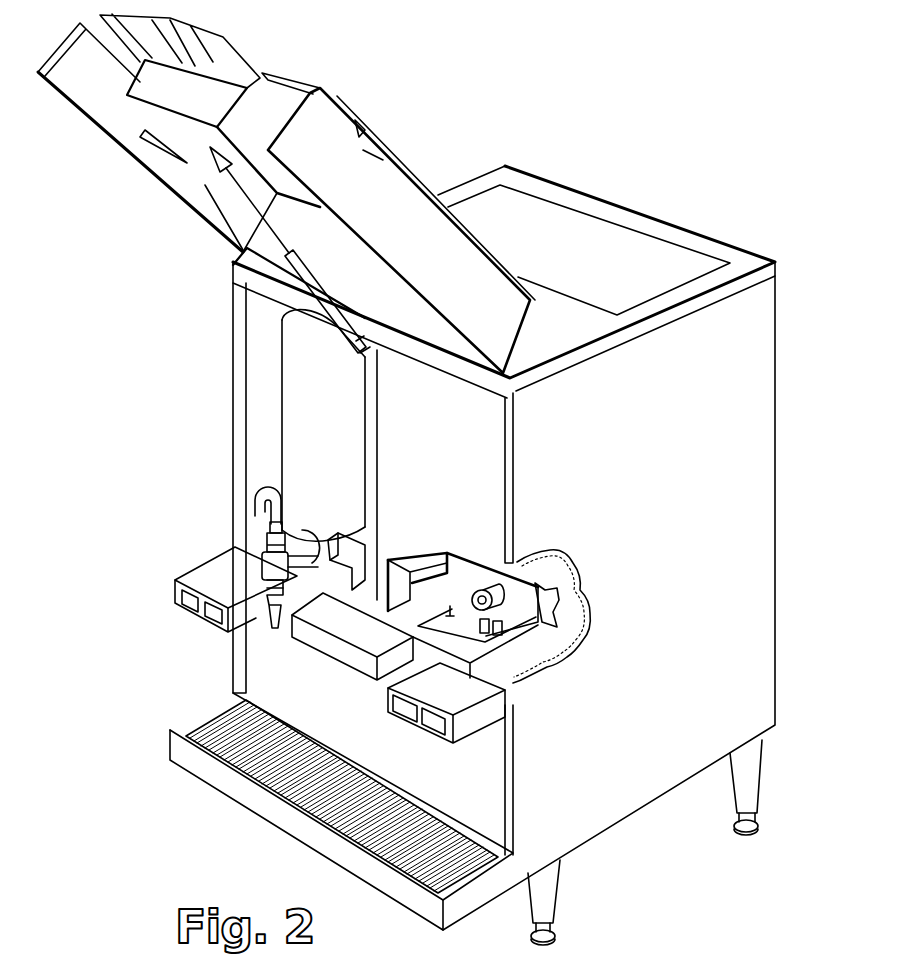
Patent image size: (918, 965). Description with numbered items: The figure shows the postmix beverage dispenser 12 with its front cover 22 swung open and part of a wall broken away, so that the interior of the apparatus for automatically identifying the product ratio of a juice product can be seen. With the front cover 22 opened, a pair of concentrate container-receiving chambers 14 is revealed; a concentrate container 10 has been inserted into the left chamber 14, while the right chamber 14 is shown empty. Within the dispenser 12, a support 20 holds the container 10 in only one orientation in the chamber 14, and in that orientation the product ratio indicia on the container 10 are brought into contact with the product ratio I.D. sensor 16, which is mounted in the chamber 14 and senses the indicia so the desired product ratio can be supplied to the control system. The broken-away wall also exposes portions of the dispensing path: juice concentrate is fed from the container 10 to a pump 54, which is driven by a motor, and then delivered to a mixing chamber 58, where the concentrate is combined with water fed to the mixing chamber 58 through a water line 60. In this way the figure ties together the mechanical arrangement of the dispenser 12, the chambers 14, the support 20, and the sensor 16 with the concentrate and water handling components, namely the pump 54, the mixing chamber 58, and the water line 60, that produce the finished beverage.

The concentrate container 10 is at (312, 404).
The postmix beverage dispenser 12 is at (607, 180).
The container-receiving chamber 14 is at (256, 383).
The product ratio I.D. sensor 16 is at (507, 647).
The support 20 is at (418, 548).
The front cover 22 is at (407, 167).
The pump 54 is at (316, 546).
The mixing chamber 58 is at (265, 567).
The water line 60 is at (260, 490).